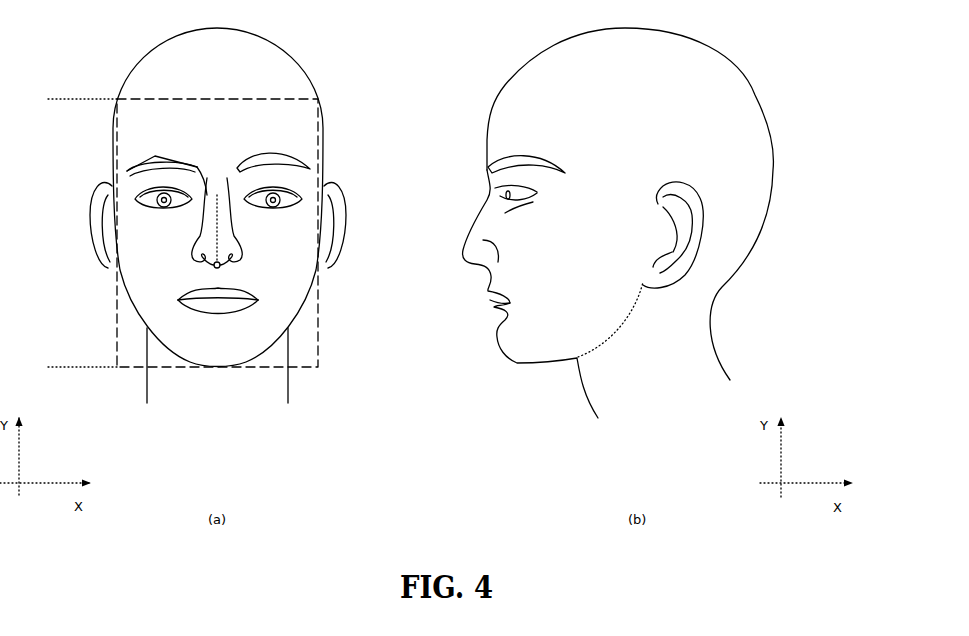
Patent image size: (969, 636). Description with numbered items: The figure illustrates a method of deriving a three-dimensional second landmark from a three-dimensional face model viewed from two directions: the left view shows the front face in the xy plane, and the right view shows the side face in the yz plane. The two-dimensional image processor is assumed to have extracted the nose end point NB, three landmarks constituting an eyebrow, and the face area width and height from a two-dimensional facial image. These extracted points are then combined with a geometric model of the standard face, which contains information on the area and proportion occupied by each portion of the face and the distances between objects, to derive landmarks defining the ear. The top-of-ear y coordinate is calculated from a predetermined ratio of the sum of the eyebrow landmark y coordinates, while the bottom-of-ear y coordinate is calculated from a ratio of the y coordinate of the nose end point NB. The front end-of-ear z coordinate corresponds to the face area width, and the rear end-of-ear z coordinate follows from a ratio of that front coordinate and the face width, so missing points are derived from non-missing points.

The nose end point NB is at (213, 268).